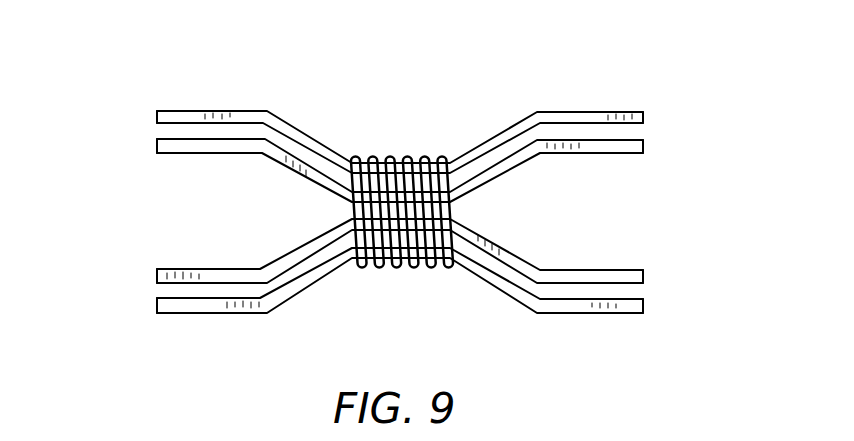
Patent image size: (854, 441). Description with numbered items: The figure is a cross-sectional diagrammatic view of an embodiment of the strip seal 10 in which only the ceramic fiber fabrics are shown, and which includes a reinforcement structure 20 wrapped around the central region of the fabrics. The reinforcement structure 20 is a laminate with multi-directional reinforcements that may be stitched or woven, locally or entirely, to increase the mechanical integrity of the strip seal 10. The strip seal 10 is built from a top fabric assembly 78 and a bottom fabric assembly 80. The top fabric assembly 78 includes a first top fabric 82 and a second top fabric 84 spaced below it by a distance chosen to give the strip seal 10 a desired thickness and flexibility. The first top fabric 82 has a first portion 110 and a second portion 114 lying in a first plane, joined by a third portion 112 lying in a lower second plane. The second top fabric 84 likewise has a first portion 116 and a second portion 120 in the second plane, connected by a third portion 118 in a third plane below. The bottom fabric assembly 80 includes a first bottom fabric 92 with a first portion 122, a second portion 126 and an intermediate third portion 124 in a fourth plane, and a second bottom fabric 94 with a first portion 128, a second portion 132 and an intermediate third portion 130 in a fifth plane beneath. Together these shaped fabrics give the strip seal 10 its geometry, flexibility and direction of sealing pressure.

The strip seal 10 is at (298, 65).
The reinforcement structure 20 is at (368, 157).
The top fabric assembly 78 is at (138, 132).
The bottom fabric assembly 80 is at (138, 290).
The first top fabric 82 is at (648, 116).
The second top fabric 84 is at (648, 147).
The first bottom fabric 92 is at (650, 277).
The second bottom fabric 94 is at (650, 308).
The first portion 110 is at (241, 110).
The third portion 112 is at (413, 157).
The second portion 114 is at (553, 111).
The first portion 116 is at (193, 139).
The third portion 118 is at (447, 160).
The second portion 120 is at (597, 139).
The first portion 122 is at (207, 283).
The third portion 124 is at (388, 267).
The second portion 126 is at (565, 286).
The first portion 128 is at (183, 315).
The third portion 130 is at (421, 267).
The second portion 132 is at (613, 316).